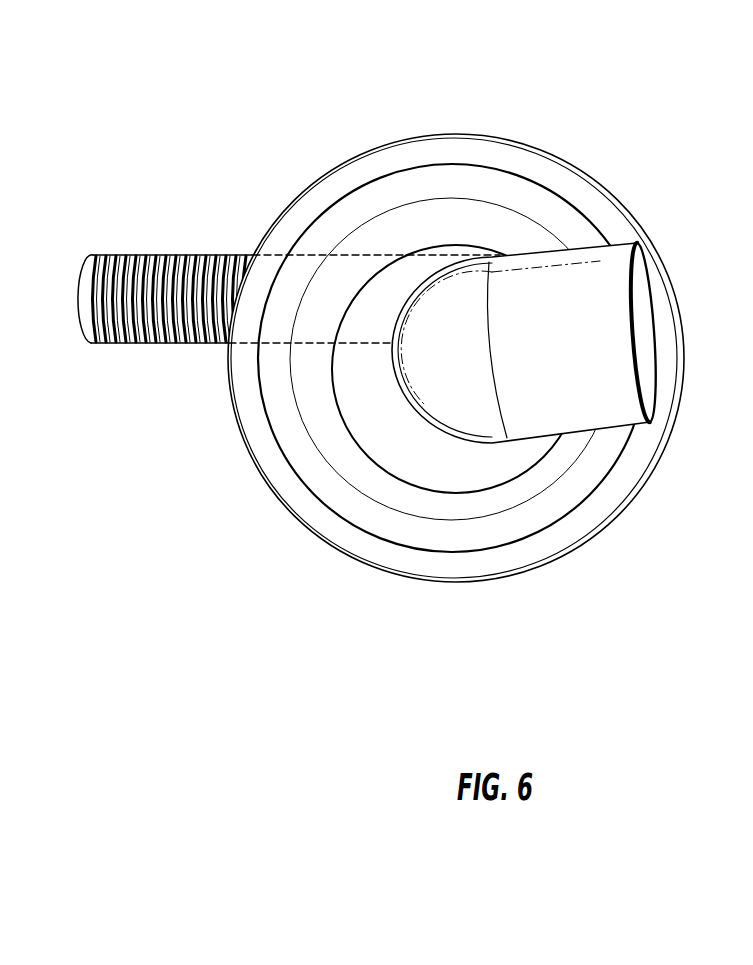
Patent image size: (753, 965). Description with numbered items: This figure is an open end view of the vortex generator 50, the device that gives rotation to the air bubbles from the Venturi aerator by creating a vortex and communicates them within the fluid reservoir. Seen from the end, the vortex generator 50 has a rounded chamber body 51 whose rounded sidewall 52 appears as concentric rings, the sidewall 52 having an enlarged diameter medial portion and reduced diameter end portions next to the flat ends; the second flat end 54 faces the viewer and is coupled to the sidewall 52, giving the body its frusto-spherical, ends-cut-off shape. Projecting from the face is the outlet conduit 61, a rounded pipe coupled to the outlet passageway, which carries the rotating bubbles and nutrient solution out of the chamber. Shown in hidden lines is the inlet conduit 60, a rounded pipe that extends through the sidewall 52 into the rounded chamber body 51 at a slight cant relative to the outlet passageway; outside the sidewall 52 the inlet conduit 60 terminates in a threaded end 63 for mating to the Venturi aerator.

The vortex generator 50 is at (460, 612).
The rounded chamber body 51 is at (294, 524).
The sidewall 52 is at (258, 443).
The second flat end 54 is at (370, 305).
The inlet conduit 60 is at (256, 250).
The outlet conduit 61 is at (530, 283).
The threaded end 63 is at (110, 256).